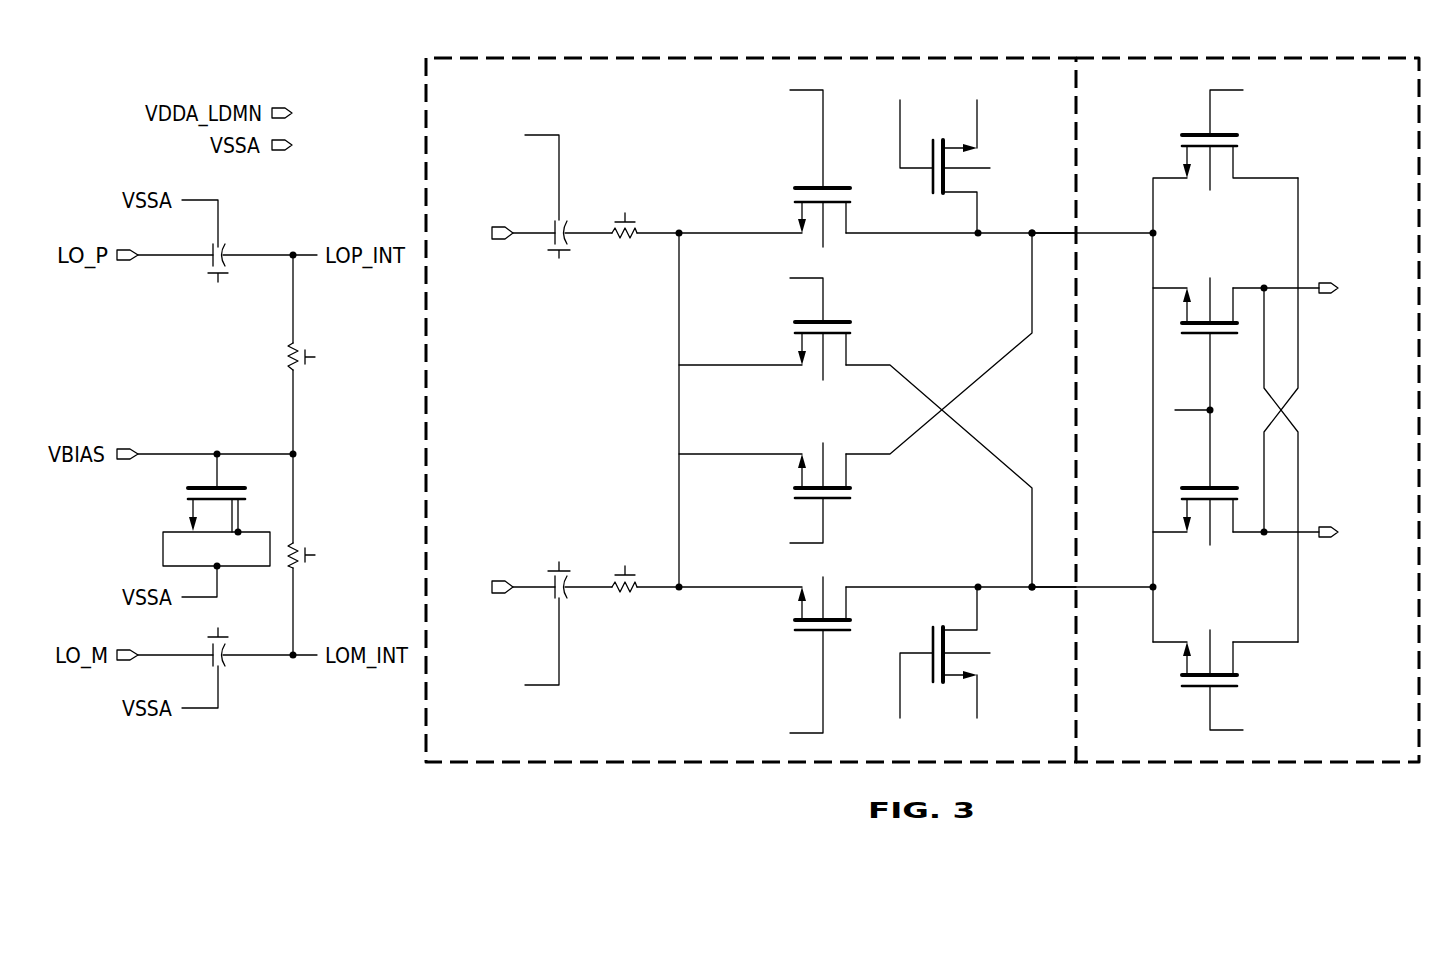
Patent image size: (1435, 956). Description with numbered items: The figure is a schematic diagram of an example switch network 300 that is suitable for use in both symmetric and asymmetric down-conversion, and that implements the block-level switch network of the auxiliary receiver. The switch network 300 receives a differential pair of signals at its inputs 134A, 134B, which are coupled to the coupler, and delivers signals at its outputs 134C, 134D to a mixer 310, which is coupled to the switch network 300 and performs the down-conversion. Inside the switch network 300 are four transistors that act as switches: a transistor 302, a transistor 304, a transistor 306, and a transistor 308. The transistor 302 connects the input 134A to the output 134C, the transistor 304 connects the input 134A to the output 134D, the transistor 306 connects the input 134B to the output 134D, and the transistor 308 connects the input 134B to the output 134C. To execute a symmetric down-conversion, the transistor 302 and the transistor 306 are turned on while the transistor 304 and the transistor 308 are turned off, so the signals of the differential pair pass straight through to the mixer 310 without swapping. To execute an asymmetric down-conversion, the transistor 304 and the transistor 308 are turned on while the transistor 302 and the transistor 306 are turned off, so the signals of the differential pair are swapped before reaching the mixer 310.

The input 134A is at (508, 228).
The input 134B is at (505, 596).
The output 134C is at (1073, 229).
The output 134D is at (1073, 592).
The switch network 300 is at (573, 425).
The transistor 302 is at (836, 187).
The transistor 304 is at (836, 321).
The transistor 306 is at (835, 632).
The transistor 308 is at (835, 500).
The mixer 310 is at (1378, 425).